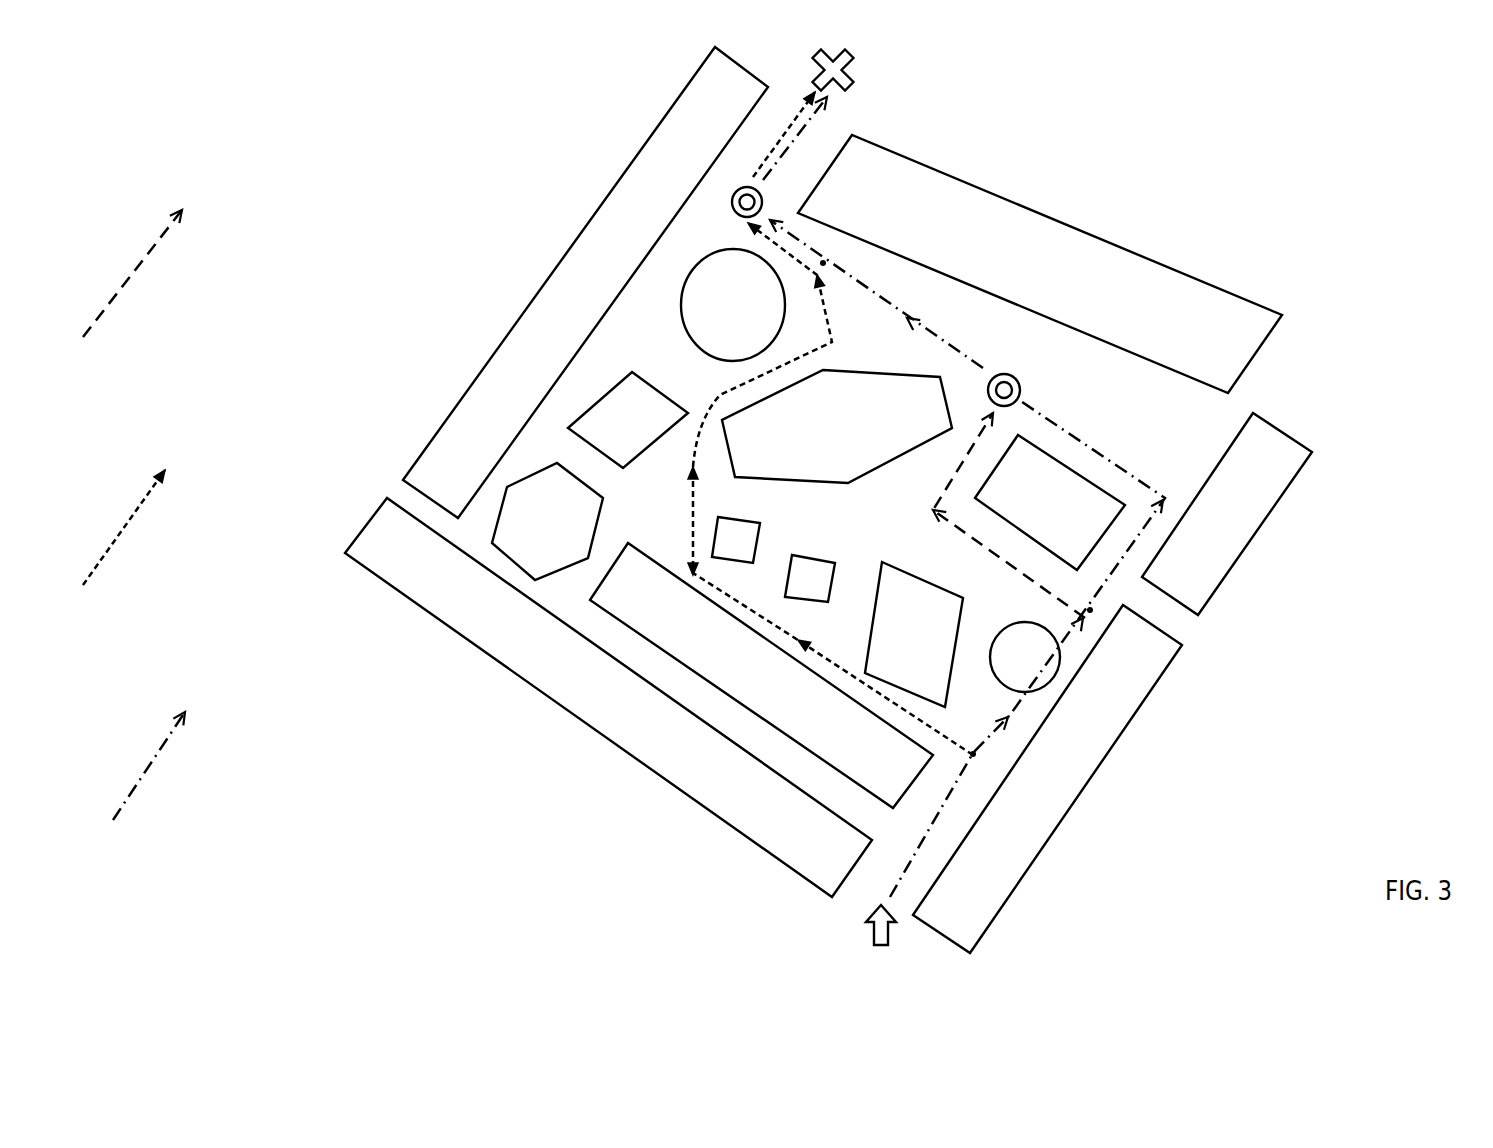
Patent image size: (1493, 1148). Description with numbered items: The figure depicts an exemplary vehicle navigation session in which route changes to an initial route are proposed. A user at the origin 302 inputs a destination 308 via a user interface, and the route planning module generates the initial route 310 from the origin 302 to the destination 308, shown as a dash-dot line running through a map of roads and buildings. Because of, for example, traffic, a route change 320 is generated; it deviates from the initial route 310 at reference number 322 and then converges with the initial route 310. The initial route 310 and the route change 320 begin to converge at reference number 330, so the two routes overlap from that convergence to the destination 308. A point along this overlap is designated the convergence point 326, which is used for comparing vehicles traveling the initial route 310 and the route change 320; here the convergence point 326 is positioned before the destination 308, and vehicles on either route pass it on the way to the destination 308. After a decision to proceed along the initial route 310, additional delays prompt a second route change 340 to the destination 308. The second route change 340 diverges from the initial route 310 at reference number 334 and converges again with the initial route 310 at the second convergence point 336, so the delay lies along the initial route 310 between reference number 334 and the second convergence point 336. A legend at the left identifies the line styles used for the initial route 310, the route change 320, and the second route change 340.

The origin 302 is at (862, 918).
The destination 308 is at (880, 62).
The initial route 310 is at (177, 770).
The route change 320 is at (162, 517).
The deviation point 322 is at (978, 760).
The convergence point 326 is at (743, 182).
The convergence 330 is at (823, 263).
The divergence point 334 is at (1090, 610).
The second convergence point 336 is at (1010, 363).
The second route change 340 is at (165, 267).